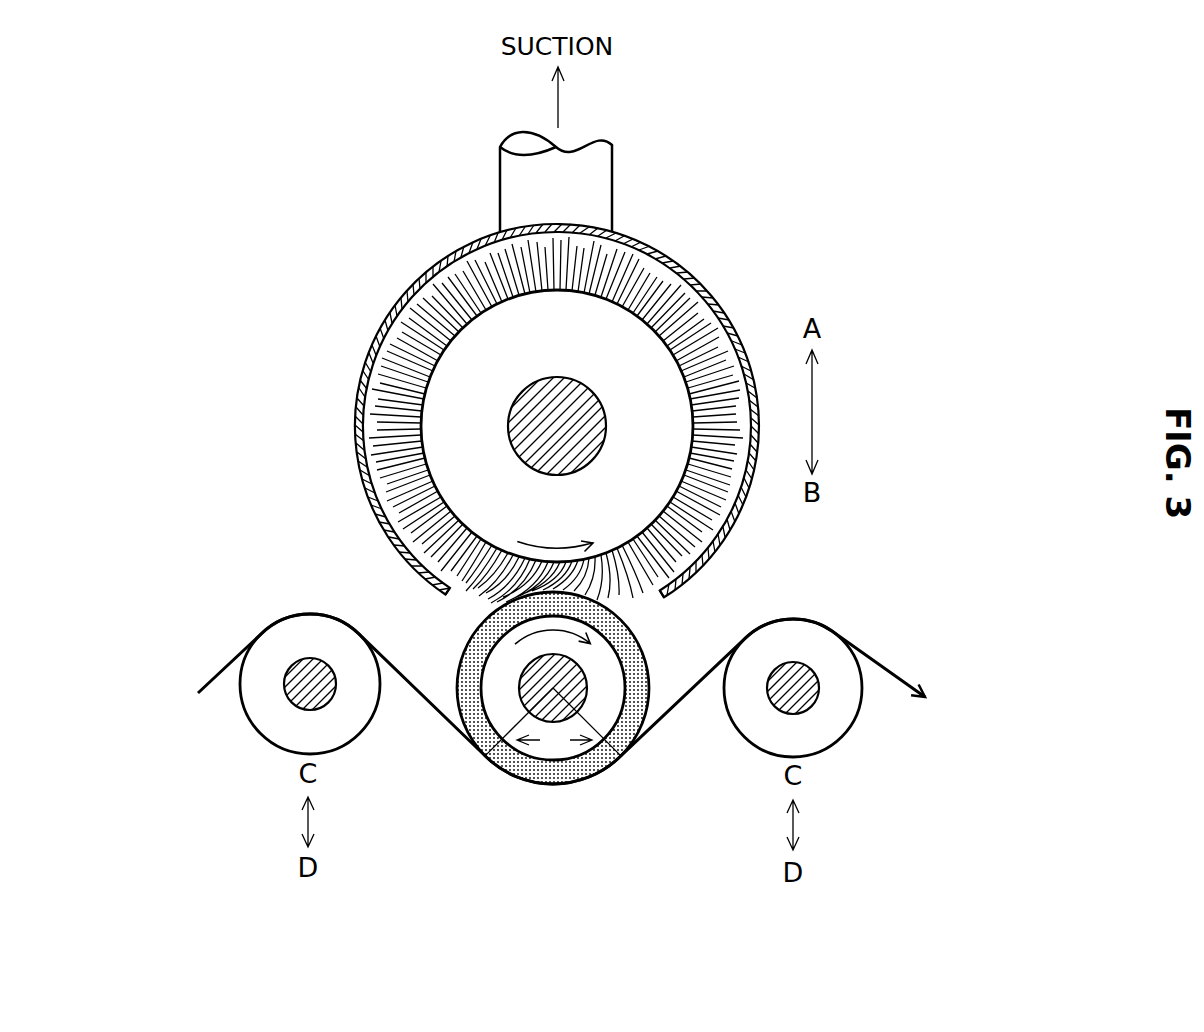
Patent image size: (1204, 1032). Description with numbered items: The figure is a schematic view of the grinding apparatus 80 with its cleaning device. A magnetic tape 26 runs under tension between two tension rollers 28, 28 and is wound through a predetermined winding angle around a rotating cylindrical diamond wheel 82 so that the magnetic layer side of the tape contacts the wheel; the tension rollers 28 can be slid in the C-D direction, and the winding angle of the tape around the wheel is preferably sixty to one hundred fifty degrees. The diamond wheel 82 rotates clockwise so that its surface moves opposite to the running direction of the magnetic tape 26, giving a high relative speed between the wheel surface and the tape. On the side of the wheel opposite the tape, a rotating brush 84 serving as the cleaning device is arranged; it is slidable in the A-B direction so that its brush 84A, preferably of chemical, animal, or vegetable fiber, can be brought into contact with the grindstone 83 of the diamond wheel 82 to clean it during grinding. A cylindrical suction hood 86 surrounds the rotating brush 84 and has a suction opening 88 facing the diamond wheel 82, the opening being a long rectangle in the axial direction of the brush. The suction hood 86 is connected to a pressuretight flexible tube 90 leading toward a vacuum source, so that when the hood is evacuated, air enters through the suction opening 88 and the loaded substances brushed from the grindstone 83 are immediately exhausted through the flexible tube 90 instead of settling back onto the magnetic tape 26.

The magnetic tape 26 is at (215, 677).
The tension rollers 28 is at (343, 735).
The grinding apparatus 80 is at (361, 582).
The diamond wheel 82 is at (560, 688).
The grindstone 83 is at (461, 672).
The rotating brush 84 is at (523, 401).
The brush 84A is at (446, 296).
The suction hood 86 is at (713, 302).
The suction opening 88 is at (632, 607).
The flexible tube 90 is at (590, 198).